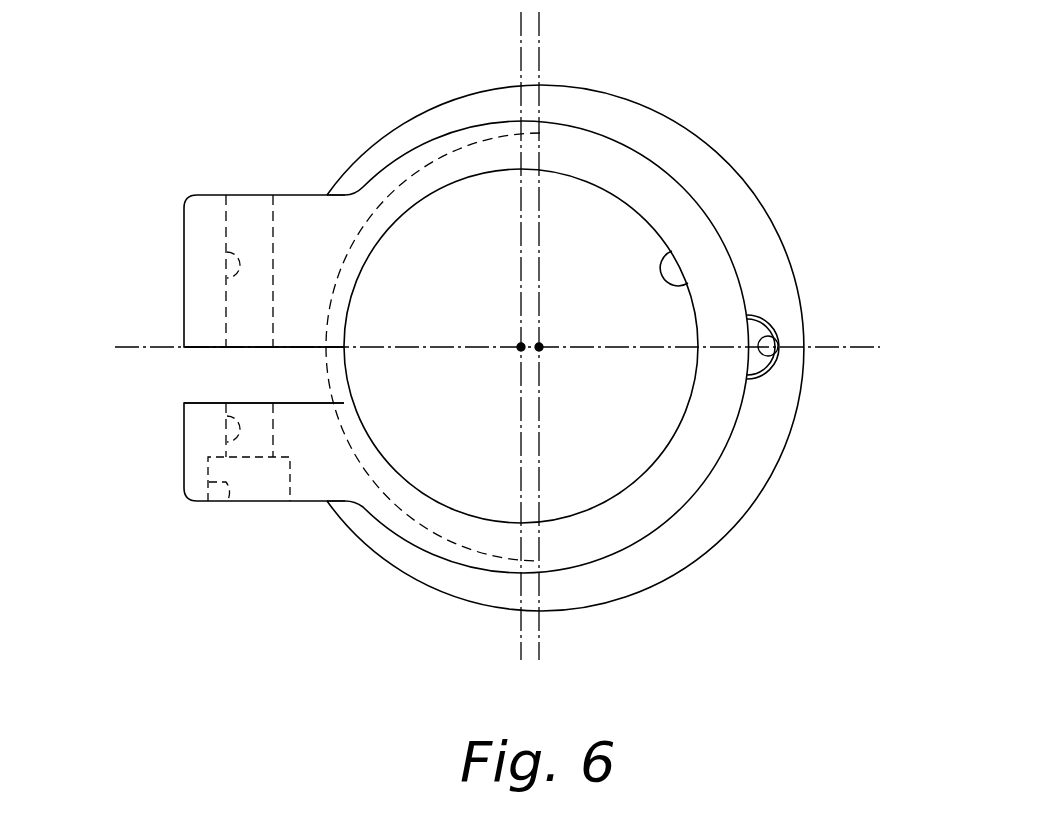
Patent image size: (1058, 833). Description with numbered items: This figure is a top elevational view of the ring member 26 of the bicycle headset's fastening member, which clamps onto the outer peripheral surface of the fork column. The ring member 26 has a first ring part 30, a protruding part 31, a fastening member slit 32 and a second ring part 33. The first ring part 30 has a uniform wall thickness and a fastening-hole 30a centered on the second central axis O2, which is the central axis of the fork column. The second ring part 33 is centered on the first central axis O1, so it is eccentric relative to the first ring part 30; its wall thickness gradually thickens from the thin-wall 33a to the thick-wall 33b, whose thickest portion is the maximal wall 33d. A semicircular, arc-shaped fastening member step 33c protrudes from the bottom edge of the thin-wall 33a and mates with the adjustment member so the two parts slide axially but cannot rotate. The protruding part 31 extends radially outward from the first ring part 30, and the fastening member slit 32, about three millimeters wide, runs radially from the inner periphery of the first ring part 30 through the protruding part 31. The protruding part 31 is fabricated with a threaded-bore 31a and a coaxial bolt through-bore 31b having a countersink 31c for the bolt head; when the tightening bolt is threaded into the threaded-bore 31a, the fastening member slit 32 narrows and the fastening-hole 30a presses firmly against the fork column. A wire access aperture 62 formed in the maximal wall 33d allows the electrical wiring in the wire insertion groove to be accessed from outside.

The ring member 26 is at (738, 80).
The first ring part 30 is at (595, 160).
The fastening-hole 30a is at (688, 287).
The protruding part 31 is at (255, 210).
The threaded-bore 31a is at (228, 281).
The bolt through-bore 31b is at (228, 446).
The countersink 31c is at (228, 501).
The fastening member slit 32 is at (210, 349).
The second ring part 33 is at (698, 167).
The thin-wall 33a is at (370, 162).
The thick-wall 33b is at (748, 222).
The fastening member step 33c is at (443, 157).
The maximal wall 33d is at (775, 395).
The wire access aperture 62 is at (772, 356).
The first central axis O1 is at (541, 346).
The second central axis O2 is at (519, 345).